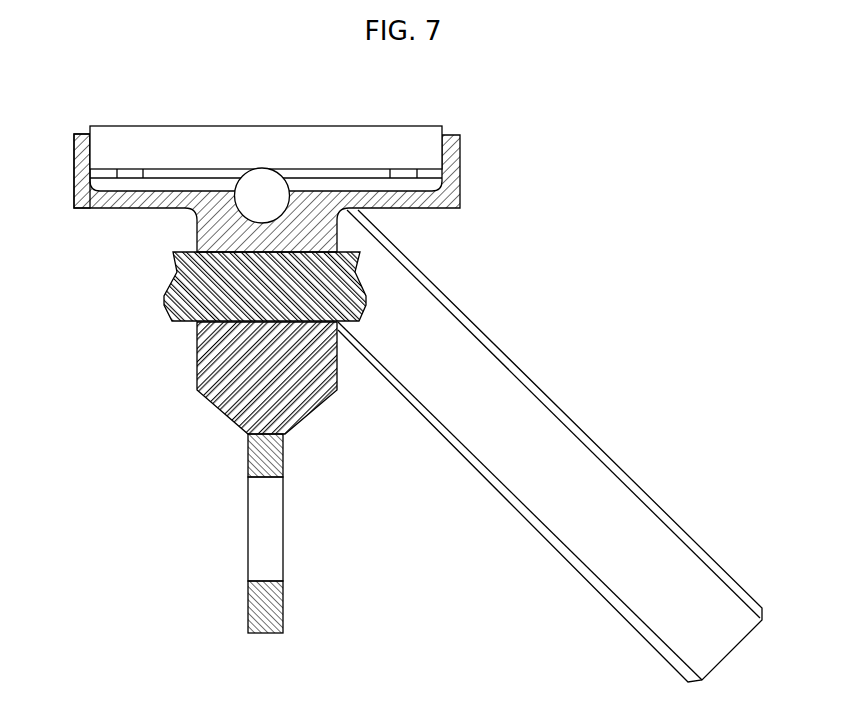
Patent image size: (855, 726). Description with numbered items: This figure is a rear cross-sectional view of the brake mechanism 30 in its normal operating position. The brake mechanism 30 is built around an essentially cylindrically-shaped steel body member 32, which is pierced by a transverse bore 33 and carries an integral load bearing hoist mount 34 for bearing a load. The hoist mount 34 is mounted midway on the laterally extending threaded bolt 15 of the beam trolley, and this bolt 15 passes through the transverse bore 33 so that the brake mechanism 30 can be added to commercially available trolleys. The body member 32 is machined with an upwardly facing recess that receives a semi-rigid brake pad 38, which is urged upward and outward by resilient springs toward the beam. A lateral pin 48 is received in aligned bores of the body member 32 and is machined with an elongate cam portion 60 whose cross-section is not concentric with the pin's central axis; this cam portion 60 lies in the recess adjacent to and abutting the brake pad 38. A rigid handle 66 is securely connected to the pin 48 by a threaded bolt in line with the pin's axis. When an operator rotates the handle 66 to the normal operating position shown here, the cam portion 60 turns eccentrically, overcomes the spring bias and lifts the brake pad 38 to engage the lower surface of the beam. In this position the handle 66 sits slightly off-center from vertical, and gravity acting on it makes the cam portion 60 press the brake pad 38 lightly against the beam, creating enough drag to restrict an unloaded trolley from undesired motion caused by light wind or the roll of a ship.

The brake mechanism 30 is at (283, 159).
The body member 32 is at (74, 173).
The brake pad 38 is at (412, 153).
The elongate cam portion 60 is at (258, 210).
The lateral pin 48 is at (305, 197).
The transverse bore 33 is at (225, 320).
The threaded bolt 15 is at (342, 298).
The hoist mount 34 is at (247, 523).
The handle 66 is at (533, 383).